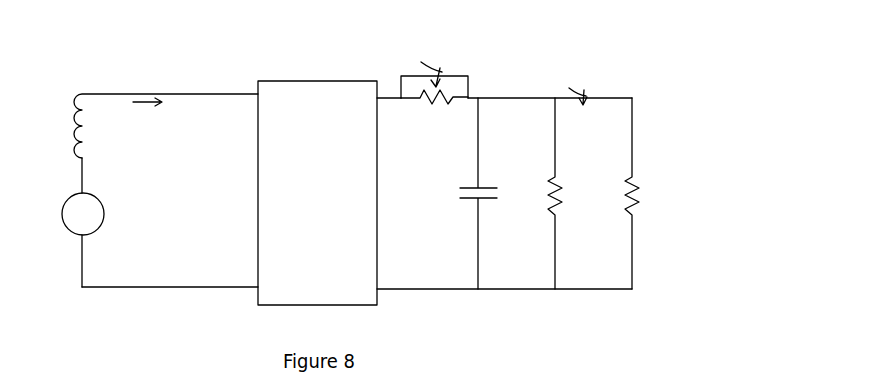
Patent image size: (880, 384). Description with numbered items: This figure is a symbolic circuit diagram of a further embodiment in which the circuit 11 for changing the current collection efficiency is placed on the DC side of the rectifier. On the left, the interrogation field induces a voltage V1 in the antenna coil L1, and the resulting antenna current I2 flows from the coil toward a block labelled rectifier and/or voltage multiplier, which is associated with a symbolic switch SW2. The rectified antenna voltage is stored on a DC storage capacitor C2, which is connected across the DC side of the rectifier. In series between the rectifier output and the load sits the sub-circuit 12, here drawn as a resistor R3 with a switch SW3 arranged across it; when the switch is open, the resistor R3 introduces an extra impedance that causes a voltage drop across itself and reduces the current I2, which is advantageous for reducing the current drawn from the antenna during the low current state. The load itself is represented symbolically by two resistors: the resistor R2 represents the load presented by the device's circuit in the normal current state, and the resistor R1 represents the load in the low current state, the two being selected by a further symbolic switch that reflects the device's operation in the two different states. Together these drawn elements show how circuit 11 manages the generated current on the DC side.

The circuit 11 is at (610, 152).
The sub-circuit 12 is at (492, 87).
The antenna coil L1 is at (147, 126).
The voltage V1 is at (70, 222).
The current I2 is at (148, 114).
The switch SW2 is at (285, 157).
The switch SW3 is at (434, 67).
The resistor R3 is at (434, 113).
The DC storage capacitor C2 is at (496, 193).
The resistor R2 is at (574, 193).
The resistor R1 is at (650, 193).